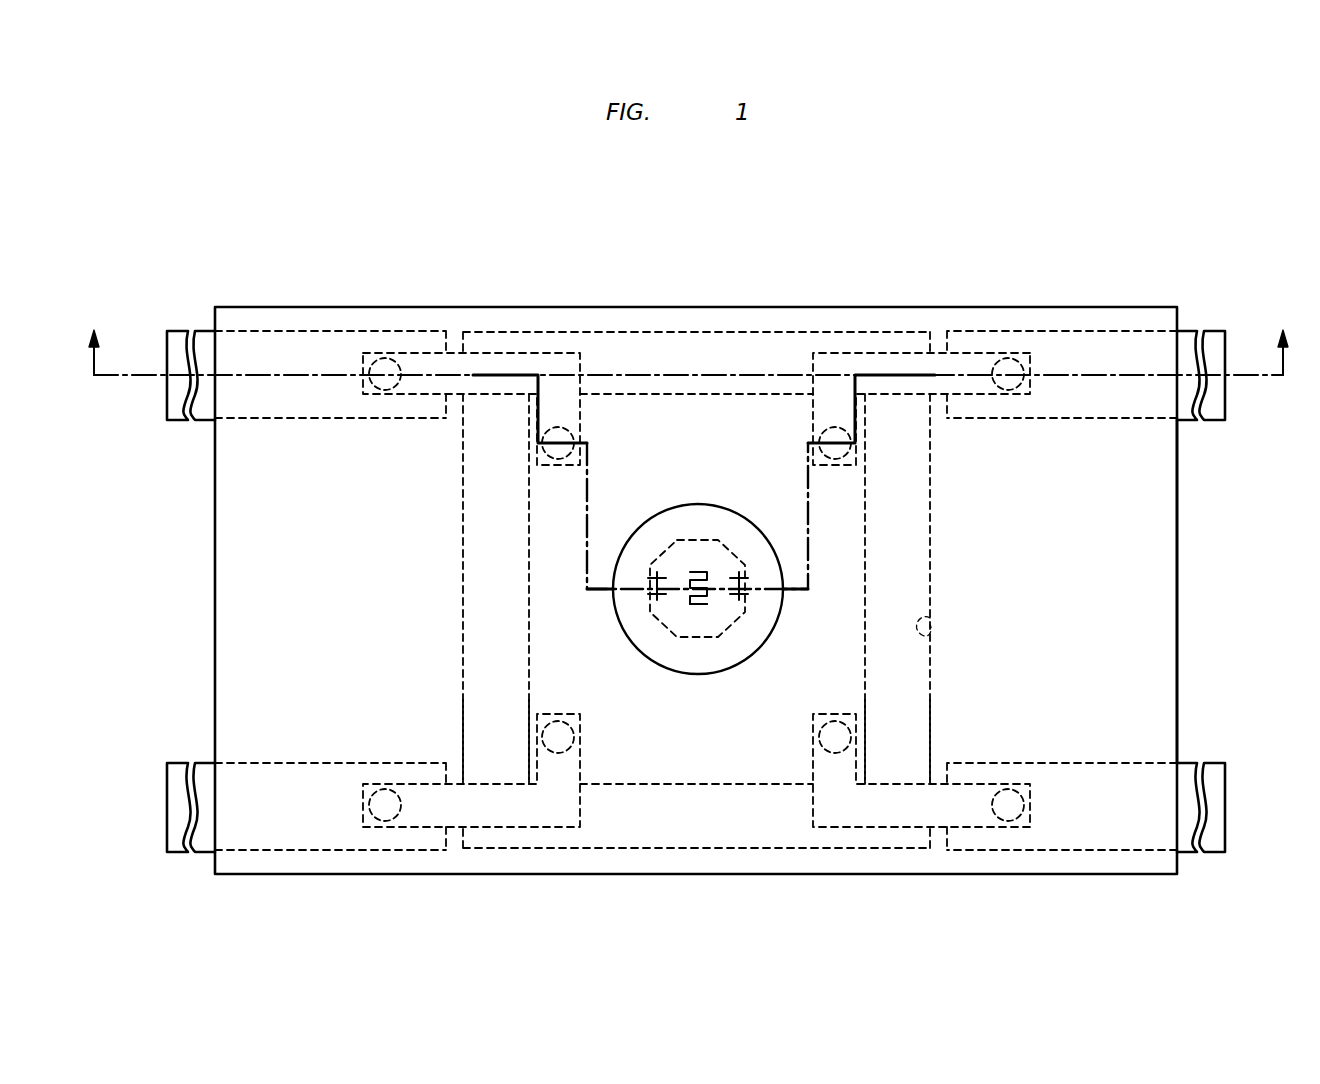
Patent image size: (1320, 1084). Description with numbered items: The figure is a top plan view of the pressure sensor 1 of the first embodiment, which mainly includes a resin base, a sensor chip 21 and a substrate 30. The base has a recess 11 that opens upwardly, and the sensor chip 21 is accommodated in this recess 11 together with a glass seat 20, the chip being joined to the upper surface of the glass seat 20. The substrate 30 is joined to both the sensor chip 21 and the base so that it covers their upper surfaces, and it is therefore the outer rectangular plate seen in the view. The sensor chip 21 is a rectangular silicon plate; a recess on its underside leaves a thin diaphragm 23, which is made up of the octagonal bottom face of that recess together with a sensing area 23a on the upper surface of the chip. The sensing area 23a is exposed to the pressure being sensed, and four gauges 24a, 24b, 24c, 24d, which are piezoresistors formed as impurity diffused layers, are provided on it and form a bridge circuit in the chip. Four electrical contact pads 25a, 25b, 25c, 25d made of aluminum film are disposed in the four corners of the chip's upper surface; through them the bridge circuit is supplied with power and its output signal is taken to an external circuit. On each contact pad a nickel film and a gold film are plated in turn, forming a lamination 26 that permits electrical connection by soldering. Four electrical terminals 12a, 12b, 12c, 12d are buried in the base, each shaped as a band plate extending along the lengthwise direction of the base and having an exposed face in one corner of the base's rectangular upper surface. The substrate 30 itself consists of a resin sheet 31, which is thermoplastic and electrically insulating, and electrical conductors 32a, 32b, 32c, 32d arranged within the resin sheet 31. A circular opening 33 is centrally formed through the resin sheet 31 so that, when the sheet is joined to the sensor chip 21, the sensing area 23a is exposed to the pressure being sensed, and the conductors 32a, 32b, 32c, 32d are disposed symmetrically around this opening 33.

The pressure sensor 1 is at (446, 230).
The recess 11 is at (930, 625).
The electrical terminal 12a is at (190, 331).
The electrical terminal 12b is at (1205, 331).
The electrical terminal 12c is at (178, 763).
The electrical terminal 12d is at (1210, 763).
The glass seat 20 is at (696, 590).
The sensor chip 21 is at (696, 590).
The diaphragm 23 is at (685, 585).
The sensing area 23a is at (672, 612).
The gauge 24a is at (657, 576).
The gauge 24b is at (697, 572).
The gauge 24c is at (739, 576).
The gauge 24d is at (698, 606).
The electrical contact pad 25a is at (553, 428).
The electrical contact pad 25b is at (837, 428).
The electrical contact pad 25c is at (560, 753).
The electrical contact pad 25d is at (835, 753).
The lamination 26 is at (696, 589).
The substrate 30 is at (1177, 588).
The resin sheet 31 is at (1163, 500).
The electrical conductor 32a is at (493, 396).
The electrical conductor 32b is at (898, 396).
The electrical conductor 32c is at (493, 782).
The electrical conductor 32d is at (897, 782).
The opening 33 is at (772, 606).